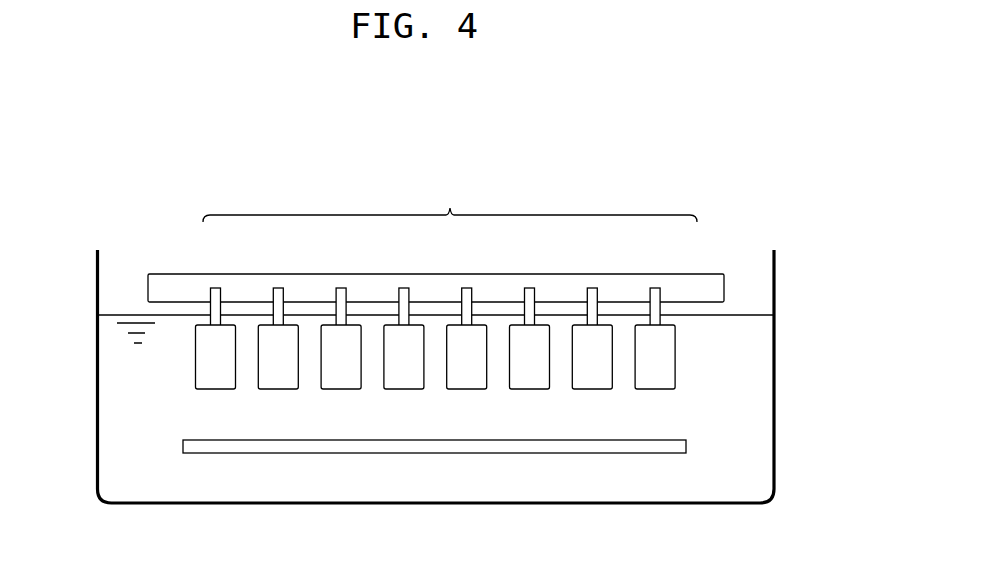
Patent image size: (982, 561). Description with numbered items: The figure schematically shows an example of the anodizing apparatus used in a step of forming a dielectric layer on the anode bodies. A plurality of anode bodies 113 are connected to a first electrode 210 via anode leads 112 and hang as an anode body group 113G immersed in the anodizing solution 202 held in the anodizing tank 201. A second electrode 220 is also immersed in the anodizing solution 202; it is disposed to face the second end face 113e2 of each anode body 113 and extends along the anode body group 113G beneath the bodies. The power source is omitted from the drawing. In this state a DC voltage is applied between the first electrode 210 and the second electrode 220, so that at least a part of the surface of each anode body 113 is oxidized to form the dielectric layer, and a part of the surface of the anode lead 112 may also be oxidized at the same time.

The anodizing tank 201 is at (777, 274).
The anodizing solution 202 is at (763, 352).
The first electrode 210 is at (161, 281).
The anode lead 112 is at (210, 312).
The anode body 113 is at (228, 330).
The anode body group 113G is at (450, 204).
The second end face 113e2 is at (207, 393).
The second electrode 220 is at (686, 447).